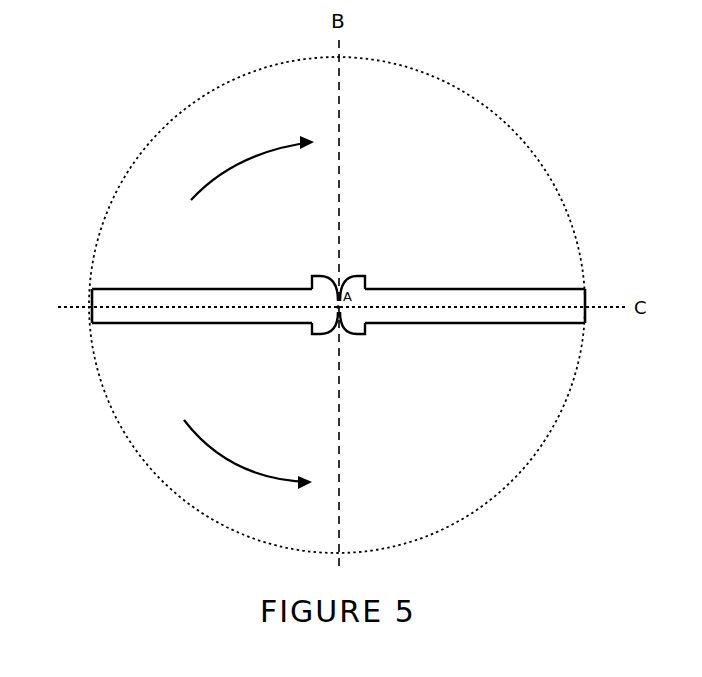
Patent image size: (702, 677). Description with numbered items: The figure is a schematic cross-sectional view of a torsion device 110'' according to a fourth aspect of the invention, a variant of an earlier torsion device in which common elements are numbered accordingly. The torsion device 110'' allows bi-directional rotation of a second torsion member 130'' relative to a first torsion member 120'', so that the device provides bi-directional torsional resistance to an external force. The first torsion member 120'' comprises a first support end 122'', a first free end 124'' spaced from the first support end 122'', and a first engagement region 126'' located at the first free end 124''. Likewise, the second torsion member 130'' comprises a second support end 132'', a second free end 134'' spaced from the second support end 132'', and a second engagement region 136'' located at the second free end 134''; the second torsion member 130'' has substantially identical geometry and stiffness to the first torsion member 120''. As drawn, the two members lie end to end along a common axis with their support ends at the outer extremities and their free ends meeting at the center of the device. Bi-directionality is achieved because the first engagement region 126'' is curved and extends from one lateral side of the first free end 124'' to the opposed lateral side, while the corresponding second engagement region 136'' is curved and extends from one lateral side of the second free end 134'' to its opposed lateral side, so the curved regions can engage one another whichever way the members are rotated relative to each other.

The torsion device 110'' is at (320, 305).
The first torsion member 120'' is at (475, 344).
The first support end 122'' is at (614, 346).
The first free end 124'' is at (374, 255).
The first engagement region 126'' is at (370, 357).
The second torsion member 130'' is at (202, 340).
The second support end 132'' is at (63, 353).
The second free end 134'' is at (312, 255).
The second engagement region 136'' is at (316, 359).